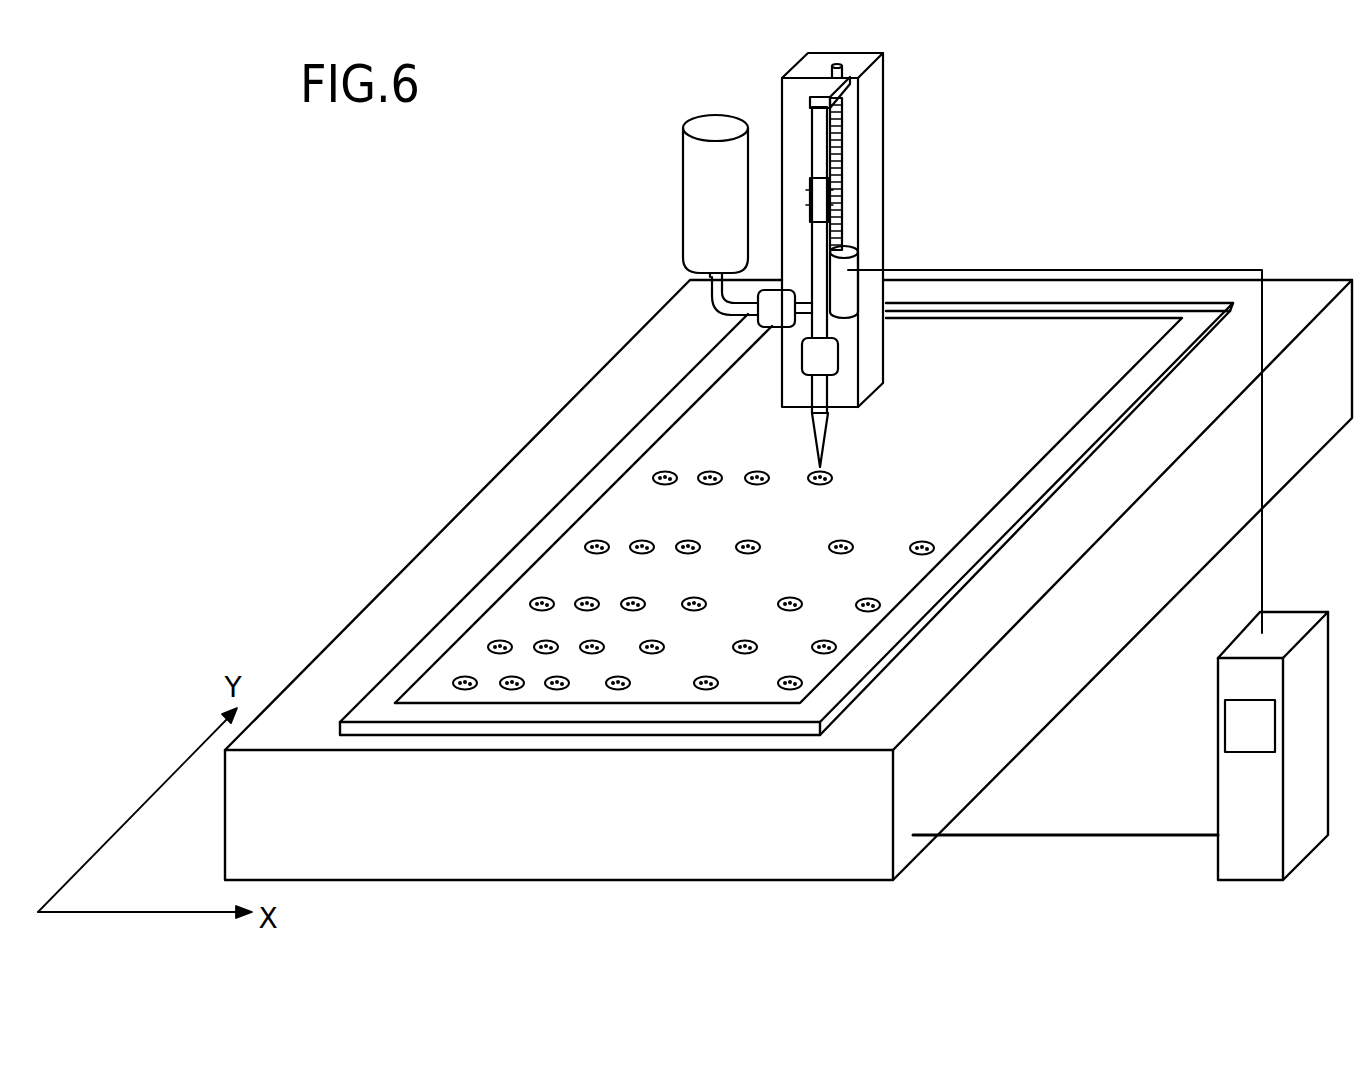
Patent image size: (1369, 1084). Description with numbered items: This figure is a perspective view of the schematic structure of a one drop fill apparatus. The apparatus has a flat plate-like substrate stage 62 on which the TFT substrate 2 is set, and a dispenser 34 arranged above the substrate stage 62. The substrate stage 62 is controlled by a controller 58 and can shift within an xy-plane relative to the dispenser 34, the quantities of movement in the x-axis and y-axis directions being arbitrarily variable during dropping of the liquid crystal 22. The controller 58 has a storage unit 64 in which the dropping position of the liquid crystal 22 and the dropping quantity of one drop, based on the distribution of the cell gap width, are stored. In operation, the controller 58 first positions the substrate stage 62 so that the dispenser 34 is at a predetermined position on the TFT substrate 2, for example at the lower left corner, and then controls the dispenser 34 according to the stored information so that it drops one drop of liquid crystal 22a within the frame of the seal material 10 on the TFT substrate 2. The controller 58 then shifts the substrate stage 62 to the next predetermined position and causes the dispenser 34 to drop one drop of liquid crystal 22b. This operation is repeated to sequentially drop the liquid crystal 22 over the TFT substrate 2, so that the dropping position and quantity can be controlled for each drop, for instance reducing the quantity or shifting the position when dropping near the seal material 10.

The TFT substrate 2 is at (447, 612).
The seal material 10 is at (570, 523).
The liquid crystal 22 is at (663, 470).
The one drop of liquid crystal 22a is at (462, 690).
The one drop of liquid crystal 22b is at (508, 690).
The dispenser 34 is at (915, 150).
The controller 58 is at (1250, 866).
The substrate stage 62 is at (673, 868).
The storage unit 64 is at (1234, 744).